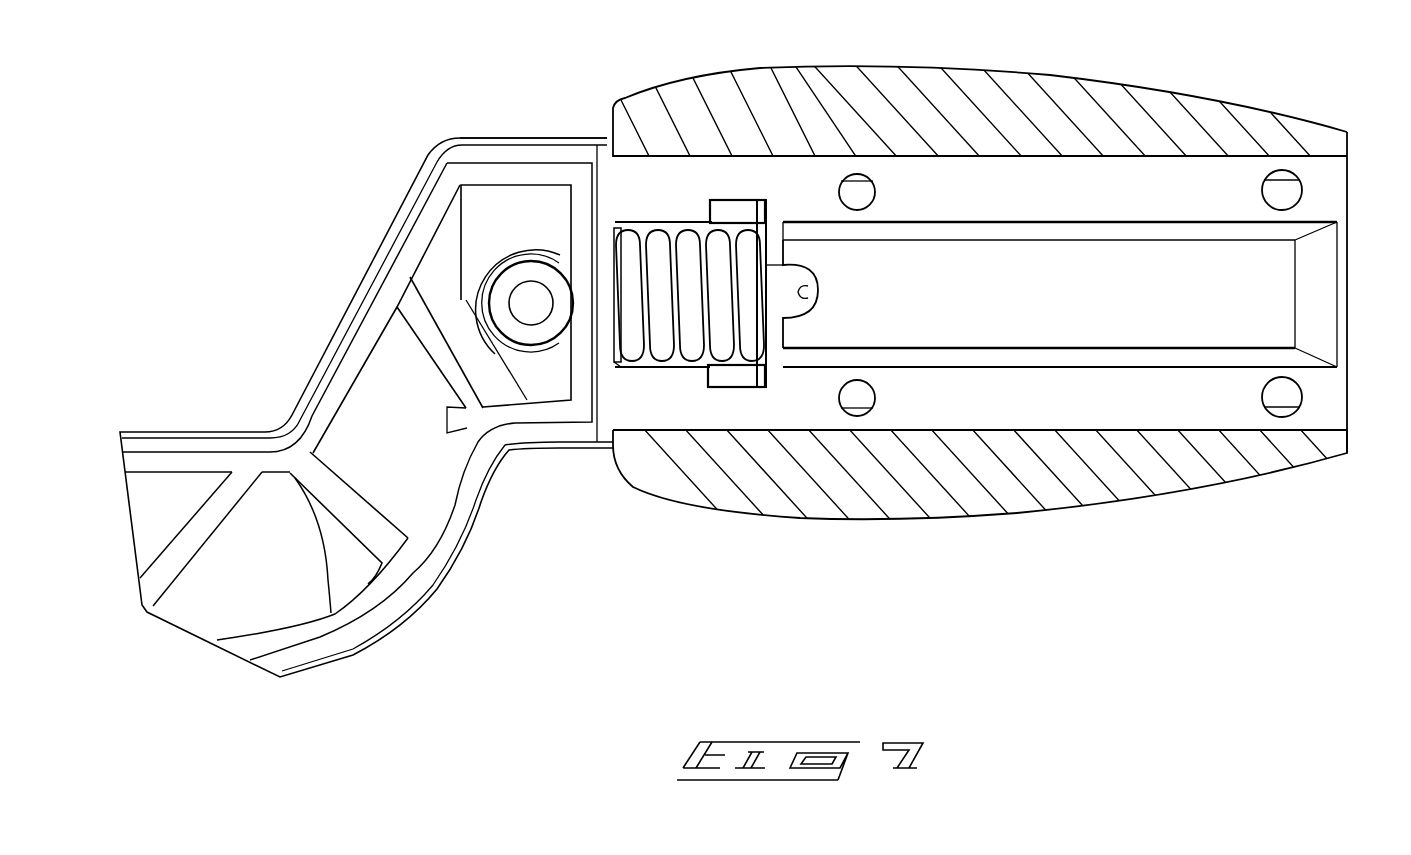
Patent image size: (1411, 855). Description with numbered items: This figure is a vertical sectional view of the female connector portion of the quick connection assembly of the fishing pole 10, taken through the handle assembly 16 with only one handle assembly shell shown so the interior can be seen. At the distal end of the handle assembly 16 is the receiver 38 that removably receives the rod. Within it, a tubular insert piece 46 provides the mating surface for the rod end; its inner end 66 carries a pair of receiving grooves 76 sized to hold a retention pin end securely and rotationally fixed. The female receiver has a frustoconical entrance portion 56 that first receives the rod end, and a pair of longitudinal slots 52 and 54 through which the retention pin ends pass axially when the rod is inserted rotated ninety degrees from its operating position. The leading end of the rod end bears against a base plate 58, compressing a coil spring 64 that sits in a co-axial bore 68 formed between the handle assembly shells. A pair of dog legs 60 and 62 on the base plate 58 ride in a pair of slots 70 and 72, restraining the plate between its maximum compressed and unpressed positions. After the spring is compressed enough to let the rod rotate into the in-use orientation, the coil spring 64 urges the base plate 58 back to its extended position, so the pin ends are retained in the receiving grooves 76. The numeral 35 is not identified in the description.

The fishing pole 10 is at (982, 341).
The handle assembly 16 is at (468, 562).
The plunger head 35 is at (766, 323).
The receiver 38 is at (922, 103).
The tubular insert piece 46 is at (1186, 350).
The longitudinal slot 52 is at (1030, 225).
The longitudinal slot 54 is at (1082, 357).
The frustoconical entrance portion 56 is at (1320, 222).
The base plate 58 is at (767, 275).
The dog leg 60 is at (767, 213).
The dog leg 62 is at (767, 373).
The coil spring 64 is at (680, 242).
The inner end 66 is at (782, 367).
The co-axial bore 68 is at (631, 230).
The slot 70 is at (738, 212).
The slot 72 is at (737, 377).
The receiving groove 76 is at (813, 290).